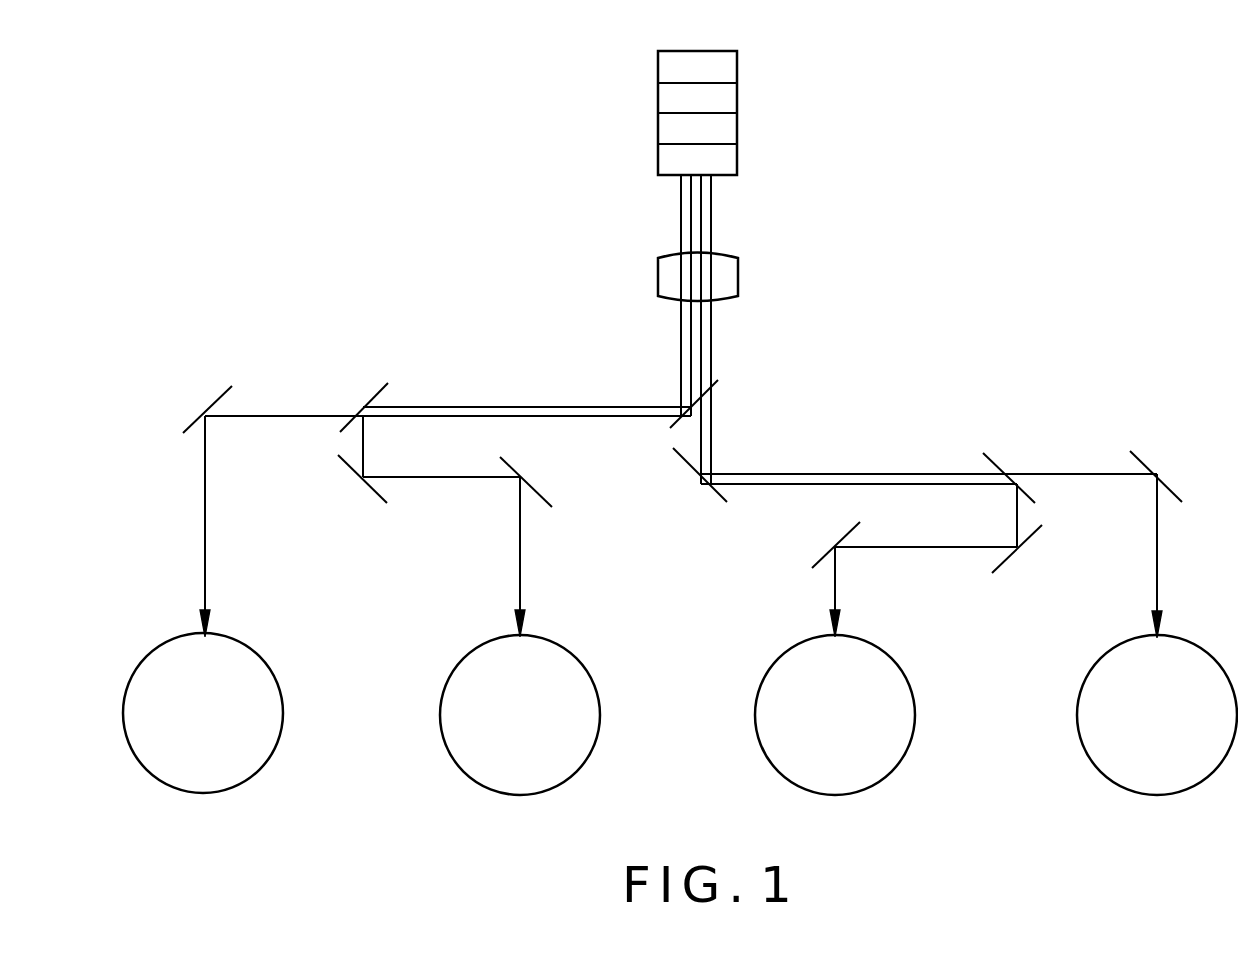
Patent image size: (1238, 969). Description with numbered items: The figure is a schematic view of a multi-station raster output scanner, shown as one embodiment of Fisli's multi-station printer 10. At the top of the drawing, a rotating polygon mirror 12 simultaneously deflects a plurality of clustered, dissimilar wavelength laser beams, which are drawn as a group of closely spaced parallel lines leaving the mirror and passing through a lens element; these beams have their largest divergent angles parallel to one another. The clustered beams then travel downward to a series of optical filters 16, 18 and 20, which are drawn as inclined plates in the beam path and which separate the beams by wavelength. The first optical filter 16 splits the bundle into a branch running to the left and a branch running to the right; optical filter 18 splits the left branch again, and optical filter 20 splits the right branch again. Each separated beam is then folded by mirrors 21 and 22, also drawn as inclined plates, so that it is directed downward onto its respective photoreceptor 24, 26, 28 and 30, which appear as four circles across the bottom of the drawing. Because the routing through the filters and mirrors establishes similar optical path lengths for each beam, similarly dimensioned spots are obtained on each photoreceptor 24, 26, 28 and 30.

The multi-station printer 10 is at (1048, 172).
The rotating polygon mirror 12 is at (723, 51).
The optical filter 16 is at (712, 386).
The optical filter 18 is at (372, 400).
The optical filter 20 is at (996, 460).
The mirror 21 is at (354, 470).
The mirror 22 is at (212, 400).
The photoreceptor 24 is at (237, 787).
The photoreceptor 26 is at (554, 789).
The photoreceptor 28 is at (868, 789).
The photoreceptor 30 is at (1190, 789).